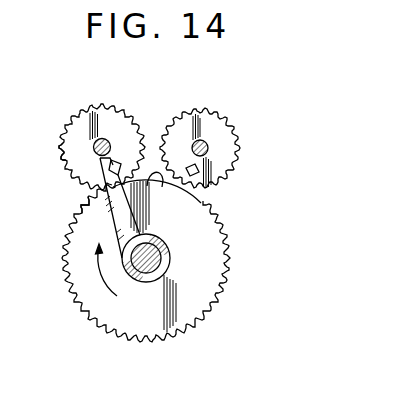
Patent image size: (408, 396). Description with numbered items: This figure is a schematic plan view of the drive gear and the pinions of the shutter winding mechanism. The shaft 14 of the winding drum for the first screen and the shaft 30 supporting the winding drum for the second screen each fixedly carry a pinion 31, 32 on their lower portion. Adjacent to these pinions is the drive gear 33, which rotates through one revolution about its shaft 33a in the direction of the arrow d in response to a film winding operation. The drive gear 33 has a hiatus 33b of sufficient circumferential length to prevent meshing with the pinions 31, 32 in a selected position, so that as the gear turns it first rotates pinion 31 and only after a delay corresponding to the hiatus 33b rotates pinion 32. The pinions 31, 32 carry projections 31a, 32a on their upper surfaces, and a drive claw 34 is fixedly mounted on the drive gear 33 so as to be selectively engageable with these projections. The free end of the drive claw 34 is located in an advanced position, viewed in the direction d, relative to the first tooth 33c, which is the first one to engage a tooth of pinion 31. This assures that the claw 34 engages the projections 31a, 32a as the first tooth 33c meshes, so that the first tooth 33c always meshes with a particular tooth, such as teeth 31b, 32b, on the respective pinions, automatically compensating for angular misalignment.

The shaft 14 is at (105, 139).
The shaft 30 is at (205, 134).
The pinion 31 is at (63, 132).
The projection 31a is at (120, 162).
The tooth 31b is at (73, 168).
The pinion 32 is at (222, 138).
The projection 32a is at (205, 168).
The tooth 32b is at (209, 180).
The drive gear 33 is at (190, 297).
The shaft 33a is at (168, 258).
The hiatus 33b is at (160, 187).
The first tooth 33c is at (88, 205).
The drive claw 34 is at (115, 218).
The arrow d is at (110, 287).